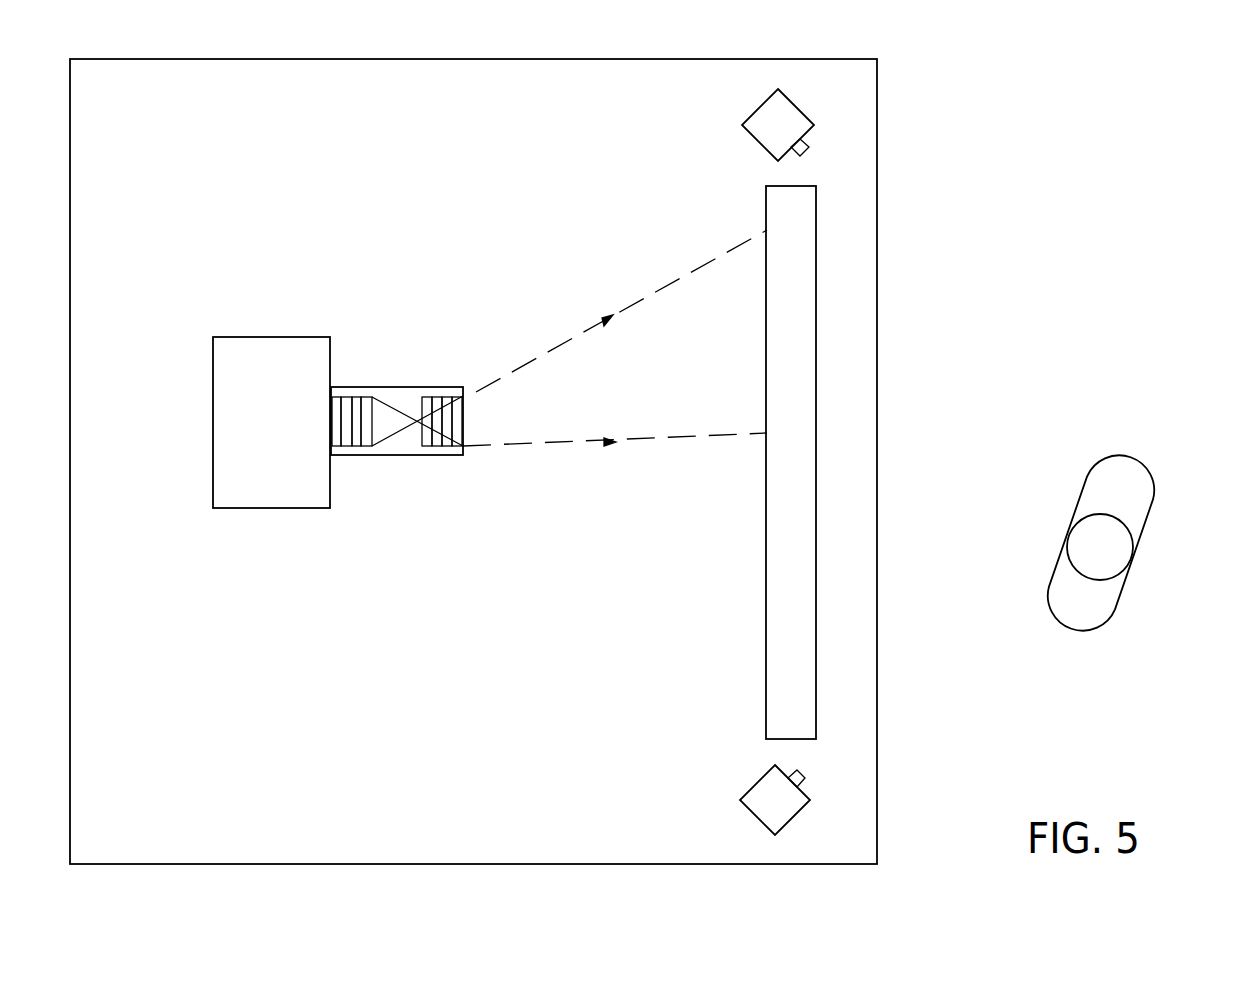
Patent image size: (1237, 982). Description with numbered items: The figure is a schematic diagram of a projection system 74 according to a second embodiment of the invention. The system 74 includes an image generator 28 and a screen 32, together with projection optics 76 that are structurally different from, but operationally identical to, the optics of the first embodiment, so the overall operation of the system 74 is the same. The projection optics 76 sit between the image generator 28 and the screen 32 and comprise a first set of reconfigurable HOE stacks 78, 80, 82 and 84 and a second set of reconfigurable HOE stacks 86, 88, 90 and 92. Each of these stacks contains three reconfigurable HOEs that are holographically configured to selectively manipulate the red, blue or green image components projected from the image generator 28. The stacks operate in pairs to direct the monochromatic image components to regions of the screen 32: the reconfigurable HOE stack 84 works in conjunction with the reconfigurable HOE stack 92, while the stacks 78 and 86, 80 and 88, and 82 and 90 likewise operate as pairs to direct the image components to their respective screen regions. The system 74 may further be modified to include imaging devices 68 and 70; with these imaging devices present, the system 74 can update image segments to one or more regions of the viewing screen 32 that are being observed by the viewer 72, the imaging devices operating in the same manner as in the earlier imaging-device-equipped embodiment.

The projection system 74 is at (527, 70).
The imaging device 70 is at (752, 118).
The screen 32 is at (806, 192).
The image generator 28 is at (240, 345).
The reconfigurable HOE stack 82 is at (352, 397).
The reconfigurable HOE stack 84 is at (363, 397).
The projection optics 76 is at (442, 388).
The reconfigurable HOE stack 78 is at (333, 455).
The reconfigurable HOE stack 80 is at (342, 455).
The reconfigurable HOE stack 86 is at (424, 455).
The reconfigurable HOE stack 88 is at (433, 455).
The reconfigurable HOE stack 90 is at (443, 455).
The reconfigurable HOE stack 92 is at (453, 455).
The viewer 72 is at (1133, 468).
The imaging device 68 is at (748, 795).